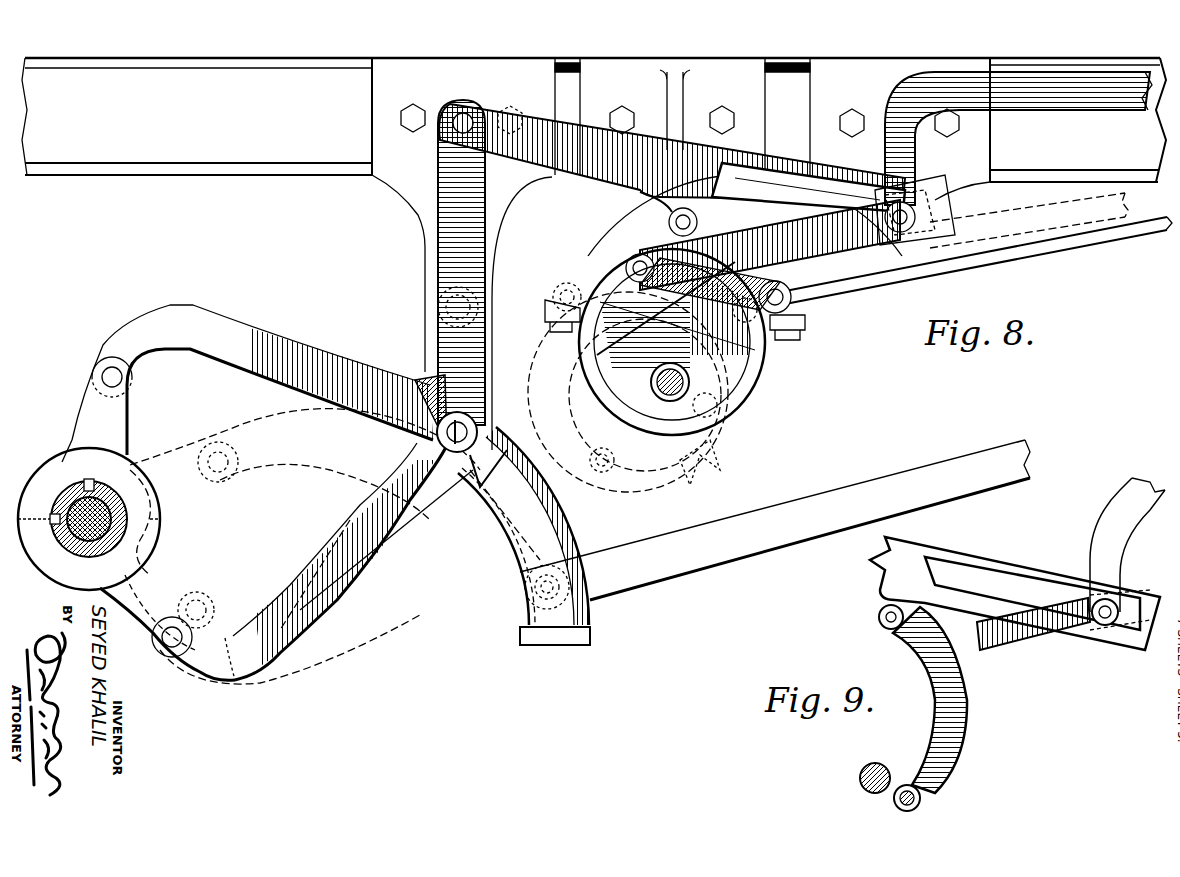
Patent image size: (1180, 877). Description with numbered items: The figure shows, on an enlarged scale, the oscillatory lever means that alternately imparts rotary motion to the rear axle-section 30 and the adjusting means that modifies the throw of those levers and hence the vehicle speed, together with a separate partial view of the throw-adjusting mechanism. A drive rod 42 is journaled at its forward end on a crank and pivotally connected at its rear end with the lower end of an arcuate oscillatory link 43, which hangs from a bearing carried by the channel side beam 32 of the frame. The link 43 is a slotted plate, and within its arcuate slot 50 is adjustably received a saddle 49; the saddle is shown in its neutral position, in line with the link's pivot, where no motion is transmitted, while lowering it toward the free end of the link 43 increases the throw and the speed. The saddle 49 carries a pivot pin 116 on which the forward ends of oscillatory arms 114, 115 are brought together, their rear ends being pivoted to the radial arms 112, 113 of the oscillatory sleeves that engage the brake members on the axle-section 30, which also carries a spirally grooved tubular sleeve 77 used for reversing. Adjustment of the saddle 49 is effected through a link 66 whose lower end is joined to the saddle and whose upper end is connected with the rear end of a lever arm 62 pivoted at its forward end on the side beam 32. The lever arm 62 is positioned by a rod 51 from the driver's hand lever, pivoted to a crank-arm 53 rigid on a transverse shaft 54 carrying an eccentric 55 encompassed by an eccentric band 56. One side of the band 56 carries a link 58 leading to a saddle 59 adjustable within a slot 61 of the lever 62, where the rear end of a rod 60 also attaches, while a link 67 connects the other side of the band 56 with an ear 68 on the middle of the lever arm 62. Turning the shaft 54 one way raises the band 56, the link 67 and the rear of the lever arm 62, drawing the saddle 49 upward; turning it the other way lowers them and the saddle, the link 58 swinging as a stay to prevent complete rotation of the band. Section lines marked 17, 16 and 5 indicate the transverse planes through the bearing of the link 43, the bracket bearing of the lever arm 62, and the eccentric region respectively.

In FIG. 8, the channel side beam 32 is at (594, 254).
In FIG. 8, the section line 17 is at (460, 700).
In FIG. 8, the section line 16 is at (672, 520).
In FIG. 8, the section line 5 is at (900, 340).
In FIG. 8, the link 66 is at (448, 238).
In FIG. 8, the lever arm 62 is at (680, 150).
In FIG. 9, the lever arm 62 is at (945, 560).
In FIG. 8, the slot 61 is at (760, 185).
In FIG. 9, the slot 61 is at (1010, 585).
In FIG. 8, the rod 60 is at (1098, 125).
In FIG. 9, the rod 60 is at (1127, 554).
In FIG. 8, the ear 68 is at (668, 222).
In FIG. 9, the ear 68 is at (879, 620).
In FIG. 8, the saddle 59 is at (955, 225).
In FIG. 8, the link 58 is at (630, 262).
In FIG. 9, the link 58 is at (1010, 620).
In FIG. 8, the rod 51 is at (1100, 240).
In FIG. 8, the crank-arm 53 is at (780, 325).
In FIG. 8, the eccentric band 56 is at (755, 385).
In FIG. 8, the transverse shaft 54 is at (660, 398).
In FIG. 9, the transverse shaft 54 is at (860, 768).
In FIG. 8, the eccentric 55 is at (640, 385).
In FIG. 8, the oscillatory arm 114 is at (310, 358).
In FIG. 8, the radial arm 112 is at (110, 427).
In FIG. 8, the rear axle-section 30 is at (115, 518).
In FIG. 8, the tubular sleeve 77 is at (110, 535).
In FIG. 8, the radial arm 113 is at (150, 590).
In FIG. 8, the oscillatory arm 115 is at (322, 560).
In FIG. 8, the pivot pin 116 is at (430, 440).
In FIG. 8, the saddle 49 is at (460, 520).
In FIG. 8, the slot 50 is at (528, 522).
In FIG. 8, the oscillatory link 43 is at (580, 618).
In FIG. 8, the drive rod 42 is at (775, 520).
In FIG. 9, the link 67 is at (960, 752).